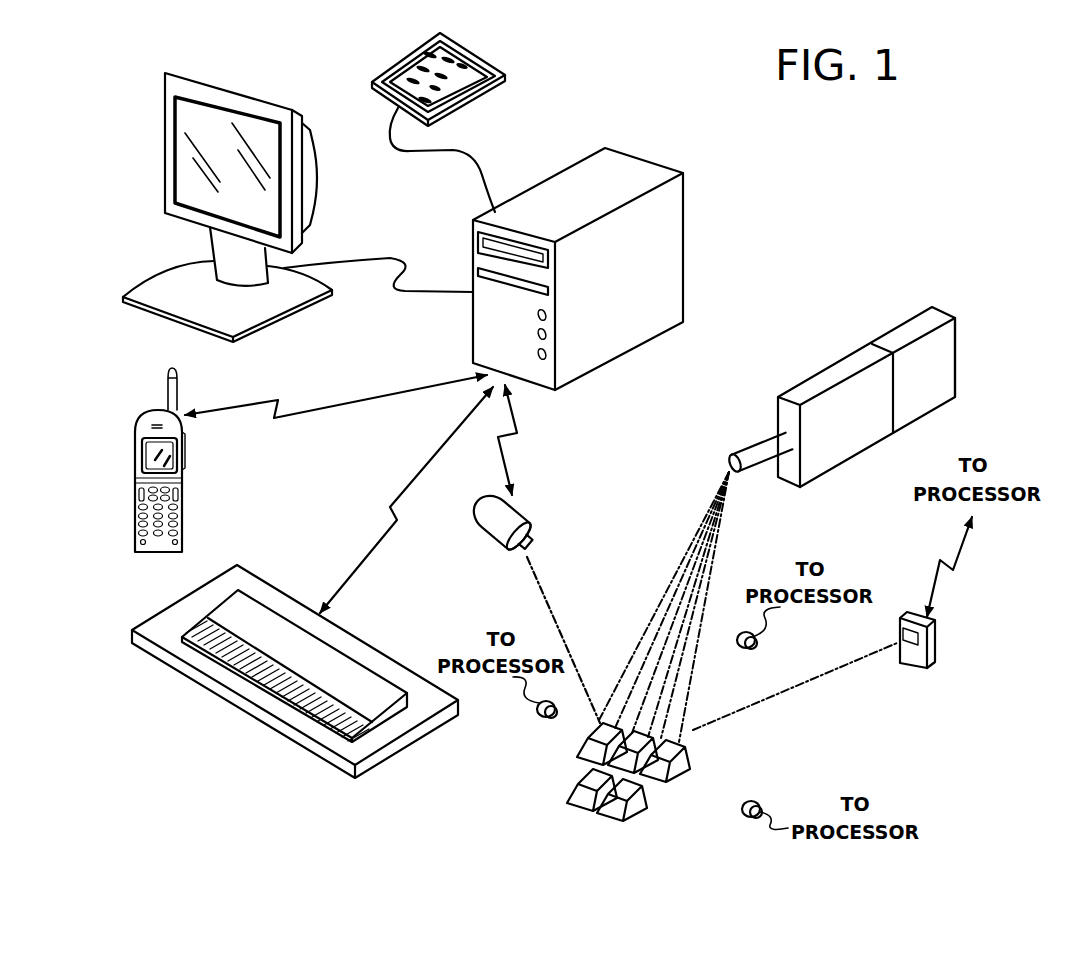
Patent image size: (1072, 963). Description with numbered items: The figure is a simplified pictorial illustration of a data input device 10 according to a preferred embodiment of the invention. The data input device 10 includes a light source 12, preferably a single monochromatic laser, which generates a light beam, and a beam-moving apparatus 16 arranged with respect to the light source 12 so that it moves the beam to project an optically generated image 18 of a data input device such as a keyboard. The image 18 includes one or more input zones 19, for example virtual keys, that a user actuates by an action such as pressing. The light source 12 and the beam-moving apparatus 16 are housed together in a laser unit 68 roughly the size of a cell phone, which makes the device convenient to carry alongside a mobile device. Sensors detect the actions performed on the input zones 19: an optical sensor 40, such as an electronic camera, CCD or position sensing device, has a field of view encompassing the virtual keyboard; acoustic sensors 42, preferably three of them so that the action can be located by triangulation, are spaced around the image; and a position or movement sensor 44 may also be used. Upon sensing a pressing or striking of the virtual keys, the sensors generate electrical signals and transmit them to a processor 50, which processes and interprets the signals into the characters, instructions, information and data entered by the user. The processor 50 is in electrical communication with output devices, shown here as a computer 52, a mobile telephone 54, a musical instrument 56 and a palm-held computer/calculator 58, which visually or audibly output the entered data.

The data input device 10 is at (885, 354).
The light source 12 is at (957, 340).
The beam-moving apparatus 16 is at (817, 383).
The optically generated image 18 is at (604, 784).
The input zone 19 is at (638, 806).
The optical sensor 40 is at (908, 653).
The acoustic sensor 42 is at (540, 719).
The position or movement sensor 44 is at (535, 513).
The processor 50 is at (640, 167).
The computer 52 is at (230, 93).
The mobile telephone 54 is at (186, 492).
The musical instrument 56 is at (372, 650).
The palm-held computer/calculator 58 is at (408, 60).
The laser unit 68 is at (953, 389).